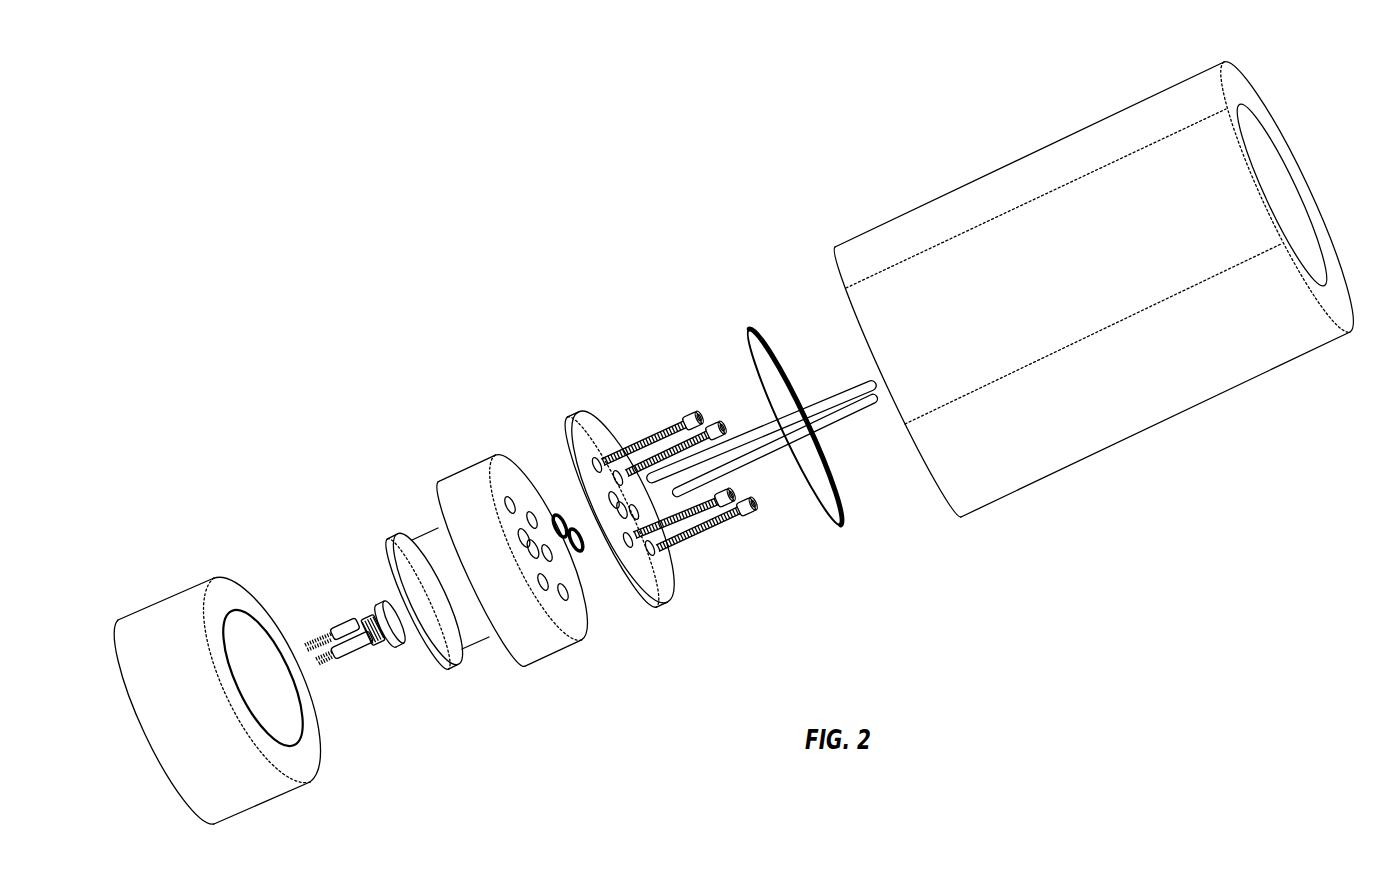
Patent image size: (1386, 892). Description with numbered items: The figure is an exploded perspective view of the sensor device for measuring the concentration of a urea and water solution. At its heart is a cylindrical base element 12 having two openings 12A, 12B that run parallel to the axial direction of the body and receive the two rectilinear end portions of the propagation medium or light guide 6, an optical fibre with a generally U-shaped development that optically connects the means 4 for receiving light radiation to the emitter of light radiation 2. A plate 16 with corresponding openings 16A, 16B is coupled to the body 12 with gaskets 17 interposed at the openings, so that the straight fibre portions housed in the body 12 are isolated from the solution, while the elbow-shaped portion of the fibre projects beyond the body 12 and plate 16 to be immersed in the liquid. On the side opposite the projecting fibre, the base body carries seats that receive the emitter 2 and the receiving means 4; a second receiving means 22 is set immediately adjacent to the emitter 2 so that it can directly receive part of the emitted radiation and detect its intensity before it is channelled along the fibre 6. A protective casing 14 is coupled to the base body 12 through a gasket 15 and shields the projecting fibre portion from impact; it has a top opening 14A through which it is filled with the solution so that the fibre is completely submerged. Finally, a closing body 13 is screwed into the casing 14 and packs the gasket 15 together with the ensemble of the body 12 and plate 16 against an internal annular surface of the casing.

The emitter of light radiation 2 is at (343, 622).
The means for receiving light radiation 4 is at (378, 608).
The propagation medium or light guide 6 is at (845, 393).
The base element 12 is at (552, 662).
The opening 12A is at (480, 483).
The opening 12B is at (552, 555).
The body for closing the device 13 is at (172, 605).
The protective casing 14 is at (1220, 398).
The top opening 14A is at (1295, 205).
The gasket 15 is at (767, 338).
The plate 16 is at (565, 418).
The opening 16A is at (623, 453).
The opening 16B is at (680, 543).
The gaskets 17 is at (562, 520).
The second receiving means 22 is at (345, 657).